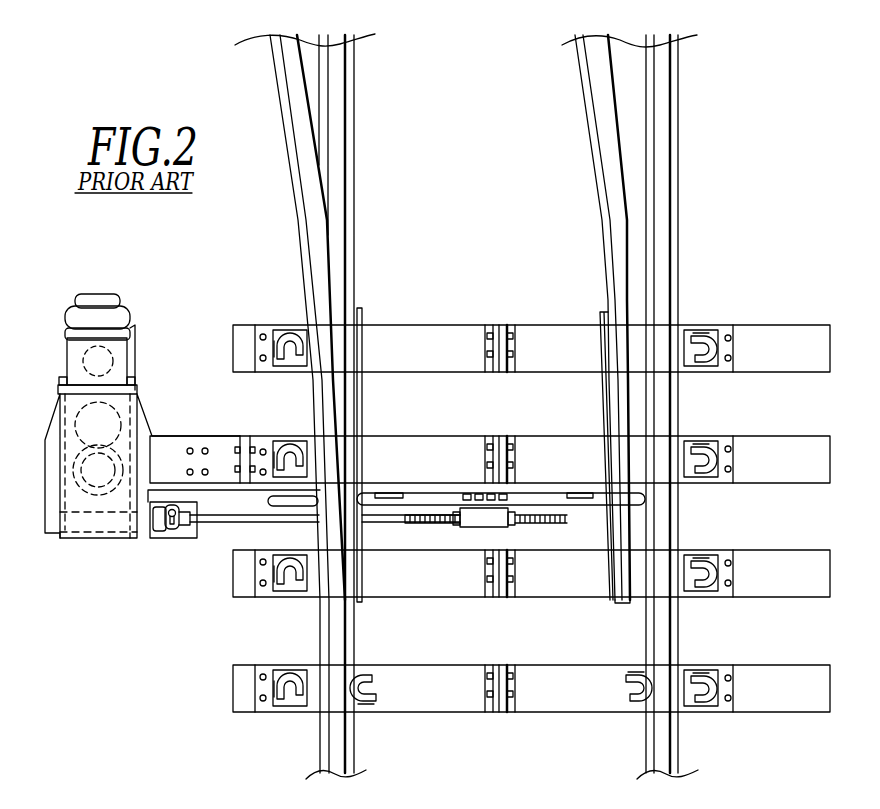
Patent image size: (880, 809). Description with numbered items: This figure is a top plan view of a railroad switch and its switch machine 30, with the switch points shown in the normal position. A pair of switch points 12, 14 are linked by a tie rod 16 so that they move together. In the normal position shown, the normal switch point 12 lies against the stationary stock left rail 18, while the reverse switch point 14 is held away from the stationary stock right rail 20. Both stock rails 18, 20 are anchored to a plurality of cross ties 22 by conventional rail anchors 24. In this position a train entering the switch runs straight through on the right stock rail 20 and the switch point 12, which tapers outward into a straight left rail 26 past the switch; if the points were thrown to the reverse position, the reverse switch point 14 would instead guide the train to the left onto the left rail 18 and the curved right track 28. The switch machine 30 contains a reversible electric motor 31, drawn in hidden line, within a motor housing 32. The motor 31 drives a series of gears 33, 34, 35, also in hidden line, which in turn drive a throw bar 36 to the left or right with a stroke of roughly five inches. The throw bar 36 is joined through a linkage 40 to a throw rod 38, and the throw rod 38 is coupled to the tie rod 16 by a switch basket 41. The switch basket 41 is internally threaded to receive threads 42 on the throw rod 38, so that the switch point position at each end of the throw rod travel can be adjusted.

The switch point 12 is at (347, 400).
The switch point 14 is at (616, 402).
The tie rod 16 is at (582, 493).
The stock left rail 18 is at (288, 98).
The stock right rail 20 is at (663, 112).
The cross ties 22 is at (412, 333).
The rail anchors 24 is at (286, 334).
The straight left rail 26 is at (342, 112).
The curved right track 28 is at (596, 90).
The switch machine 30 is at (131, 425).
The reversible electric motor 31 is at (114, 358).
The motor housing 32 is at (75, 352).
The gear 33 is at (135, 416).
The gear 34 is at (540, 525).
The gear 35 is at (75, 525).
The throw bar 36 is at (127, 528).
The throw rod 38 is at (240, 518).
The linkage 40 is at (172, 533).
The switch basket 41 is at (477, 523).
The threads 42 is at (420, 525).